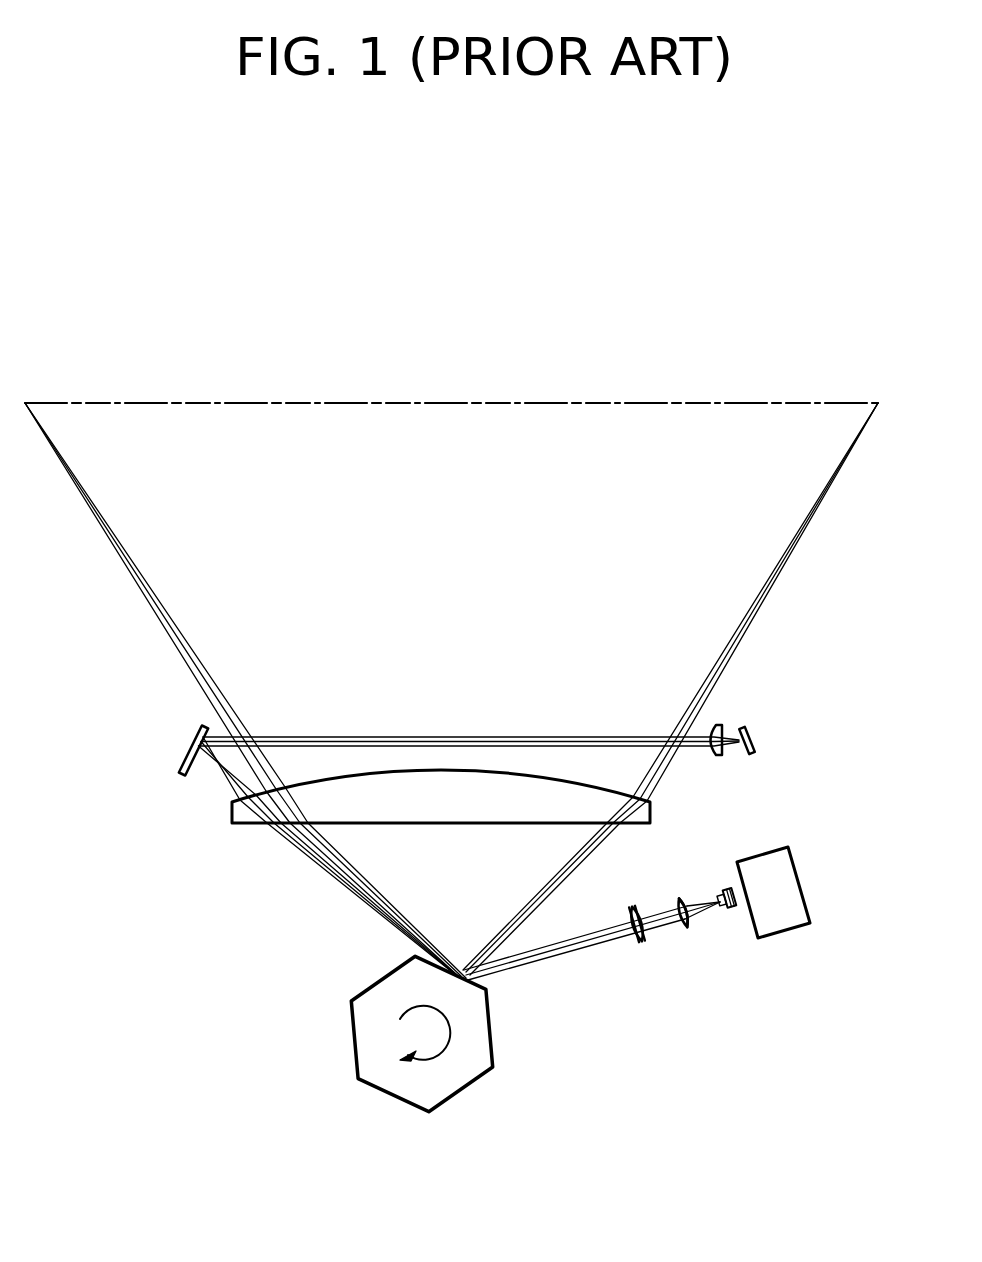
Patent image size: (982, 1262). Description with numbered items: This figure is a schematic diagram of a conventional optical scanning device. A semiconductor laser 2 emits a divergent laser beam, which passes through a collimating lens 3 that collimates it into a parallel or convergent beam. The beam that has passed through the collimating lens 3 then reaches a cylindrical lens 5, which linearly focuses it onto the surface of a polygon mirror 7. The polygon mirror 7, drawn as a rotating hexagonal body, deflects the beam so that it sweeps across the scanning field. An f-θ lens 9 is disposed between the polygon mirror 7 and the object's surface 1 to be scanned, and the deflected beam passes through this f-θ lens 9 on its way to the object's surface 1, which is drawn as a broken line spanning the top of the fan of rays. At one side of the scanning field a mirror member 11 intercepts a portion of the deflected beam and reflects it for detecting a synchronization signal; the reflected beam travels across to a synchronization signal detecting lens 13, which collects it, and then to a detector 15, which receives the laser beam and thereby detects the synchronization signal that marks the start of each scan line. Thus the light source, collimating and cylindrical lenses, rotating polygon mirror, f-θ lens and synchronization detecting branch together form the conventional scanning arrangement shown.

The object's surface 1 is at (740, 362).
The semiconductor laser 2 is at (736, 910).
The collimating lens 3 is at (688, 926).
The cylindrical lens 5 is at (640, 943).
The polygon mirror 7 is at (383, 1052).
The f-θ lens 9 is at (232, 811).
The mirror member 11 is at (178, 759).
The synchronization signal detecting lens 13 is at (716, 757).
The detector 15 is at (750, 755).